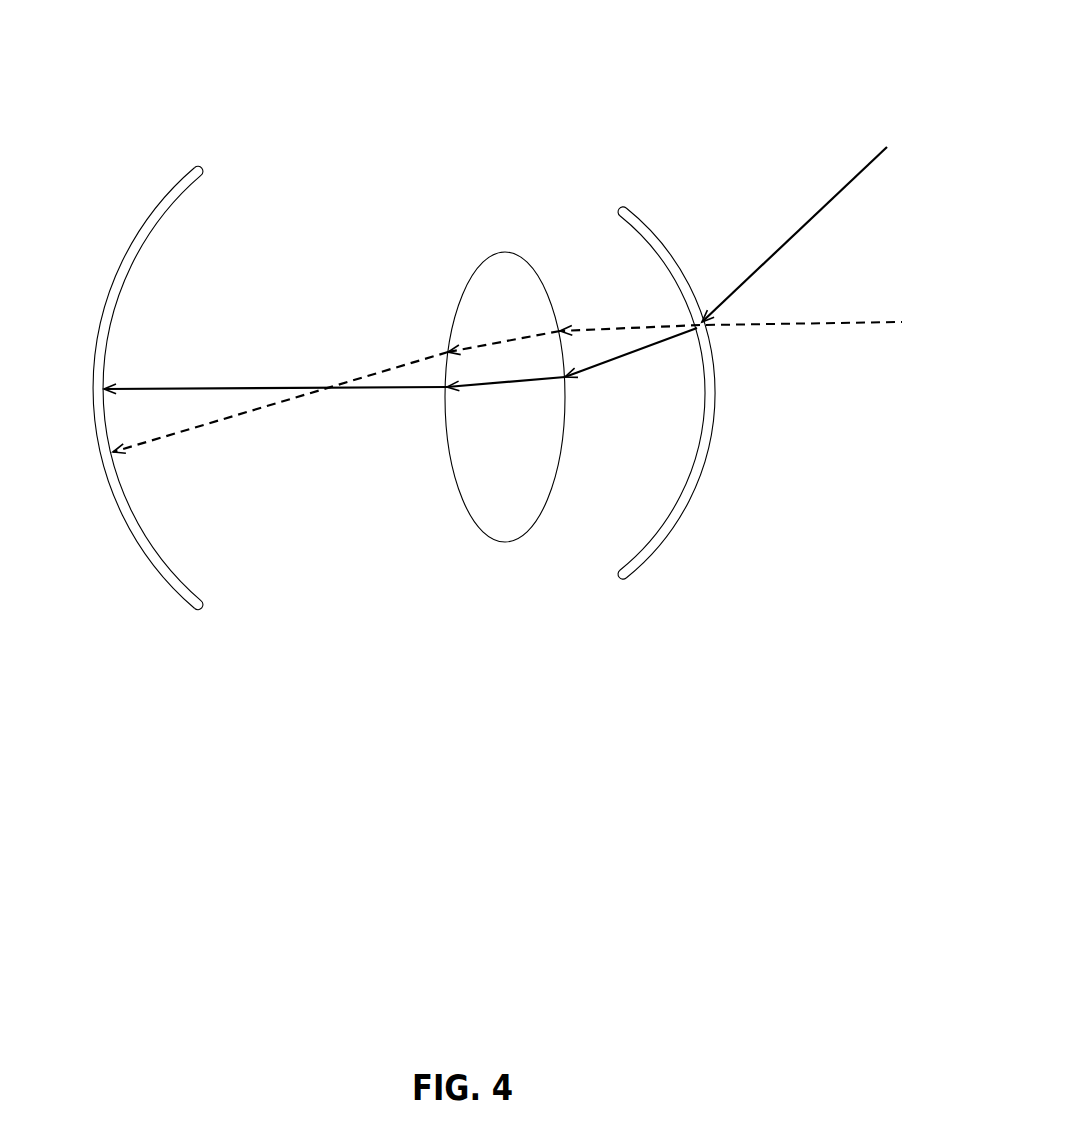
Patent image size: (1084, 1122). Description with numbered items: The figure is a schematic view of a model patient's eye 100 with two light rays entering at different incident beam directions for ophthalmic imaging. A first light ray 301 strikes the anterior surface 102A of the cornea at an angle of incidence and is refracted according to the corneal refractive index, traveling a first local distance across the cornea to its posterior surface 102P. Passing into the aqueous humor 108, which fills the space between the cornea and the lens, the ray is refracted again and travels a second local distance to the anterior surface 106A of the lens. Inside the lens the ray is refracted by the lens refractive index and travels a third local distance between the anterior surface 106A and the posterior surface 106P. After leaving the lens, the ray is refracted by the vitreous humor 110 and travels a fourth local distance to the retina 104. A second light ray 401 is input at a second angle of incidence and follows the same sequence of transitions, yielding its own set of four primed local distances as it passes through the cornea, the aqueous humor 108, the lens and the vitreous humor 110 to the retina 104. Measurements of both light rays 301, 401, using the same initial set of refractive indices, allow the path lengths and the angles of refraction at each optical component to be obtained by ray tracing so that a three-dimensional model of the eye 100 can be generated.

The model patient's eye 100 is at (604, 56).
The light ray 301 is at (848, 170).
The light ray 401 is at (838, 310).
The retina 104 is at (129, 527).
The posterior surface of lens 106P is at (474, 270).
The anterior surface of lens 106A is at (545, 288).
The anterior surface of cornea 102A is at (712, 342).
The posterior surface of cornea 102P is at (694, 335).
The vitreous humor 110 is at (340, 477).
The aqueous humor 108 is at (640, 477).